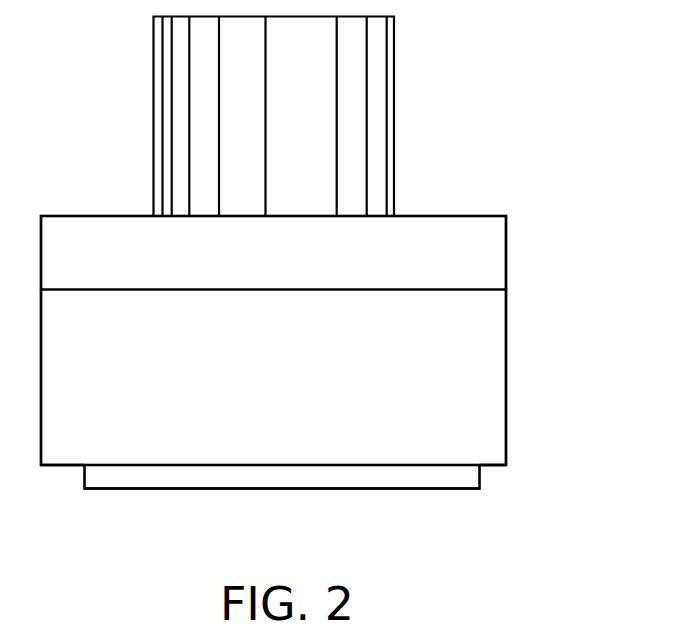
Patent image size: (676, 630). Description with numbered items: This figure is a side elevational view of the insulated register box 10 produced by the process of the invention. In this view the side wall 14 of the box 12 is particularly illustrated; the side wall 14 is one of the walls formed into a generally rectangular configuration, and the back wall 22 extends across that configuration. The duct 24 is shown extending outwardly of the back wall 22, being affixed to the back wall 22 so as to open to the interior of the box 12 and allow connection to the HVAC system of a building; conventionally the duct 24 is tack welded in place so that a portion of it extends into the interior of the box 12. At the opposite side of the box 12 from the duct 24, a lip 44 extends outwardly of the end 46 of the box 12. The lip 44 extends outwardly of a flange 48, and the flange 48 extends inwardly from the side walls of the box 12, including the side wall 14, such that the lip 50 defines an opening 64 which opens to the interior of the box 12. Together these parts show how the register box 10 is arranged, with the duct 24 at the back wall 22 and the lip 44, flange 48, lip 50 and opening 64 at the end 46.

The insulated register box 10 is at (474, 118).
The box 12 is at (506, 403).
The side wall 14 is at (494, 357).
The back wall 22 is at (441, 216).
The duct 24 is at (378, 88).
The lip 44 is at (443, 490).
The end 46 is at (498, 466).
The flange 48 is at (66, 466).
The lip 50 is at (270, 489).
The opening 64 is at (362, 512).